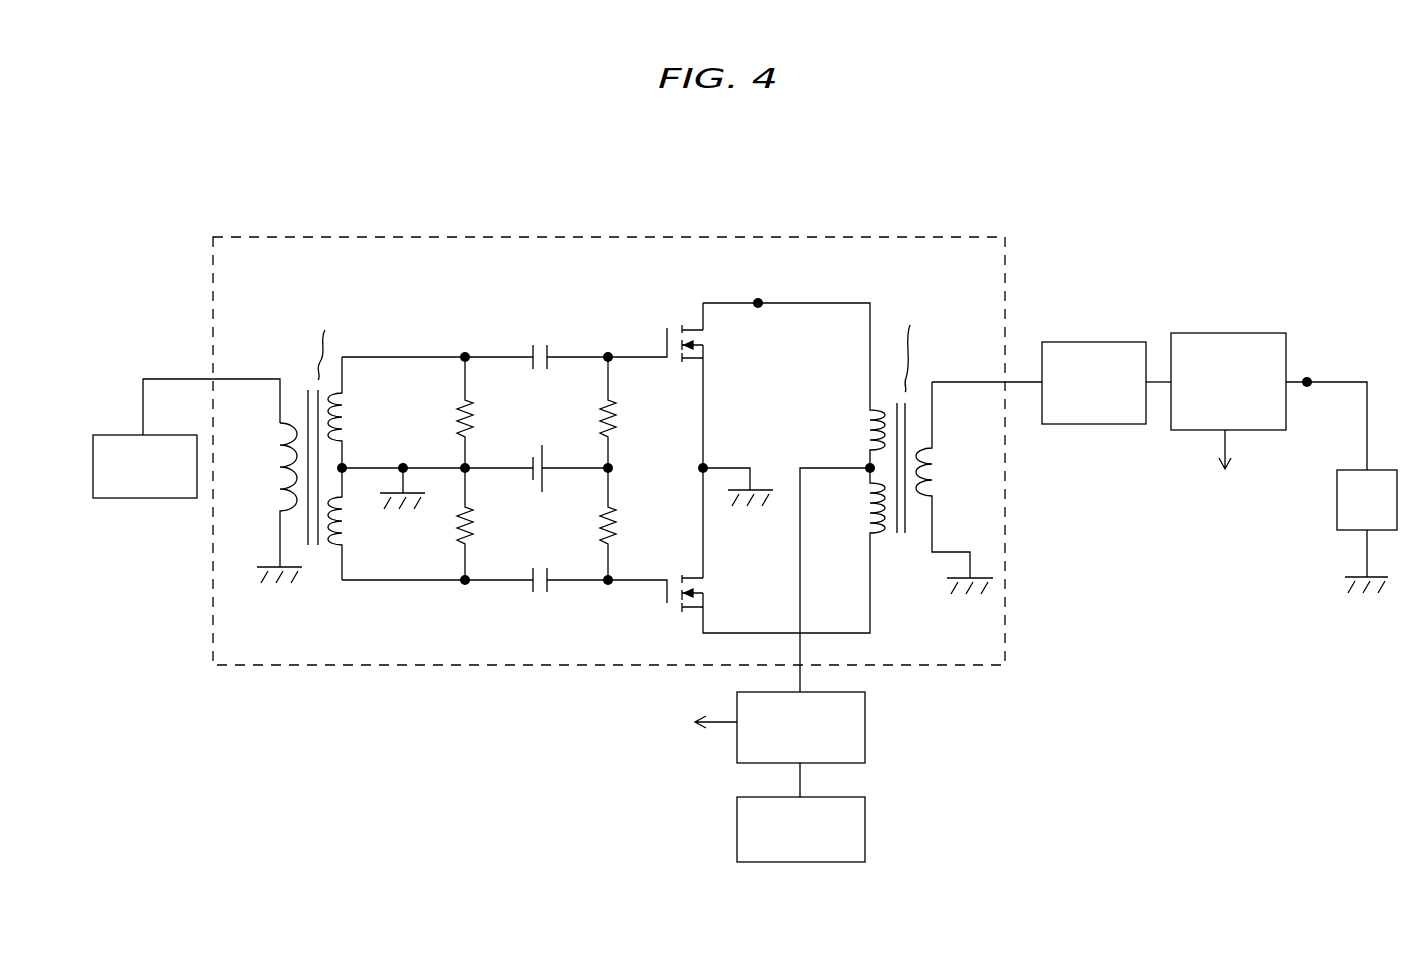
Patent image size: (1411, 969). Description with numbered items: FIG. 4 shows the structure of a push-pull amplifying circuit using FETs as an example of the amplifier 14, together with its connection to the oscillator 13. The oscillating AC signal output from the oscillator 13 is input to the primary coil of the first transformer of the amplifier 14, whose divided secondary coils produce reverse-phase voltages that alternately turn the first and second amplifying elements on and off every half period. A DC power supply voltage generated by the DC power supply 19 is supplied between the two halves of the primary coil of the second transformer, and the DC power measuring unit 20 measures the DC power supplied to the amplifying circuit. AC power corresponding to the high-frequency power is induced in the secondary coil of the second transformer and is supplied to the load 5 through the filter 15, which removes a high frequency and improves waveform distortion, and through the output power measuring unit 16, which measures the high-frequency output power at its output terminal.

The amplifier 14 is at (563, 231).
The oscillator 13 is at (170, 498).
The filter 15 is at (1092, 342).
The output power measuring unit 16 is at (1228, 333).
The load 5 is at (1365, 470).
The DC power measuring unit 20 is at (865, 727).
The DC power supply 19 is at (865, 832).